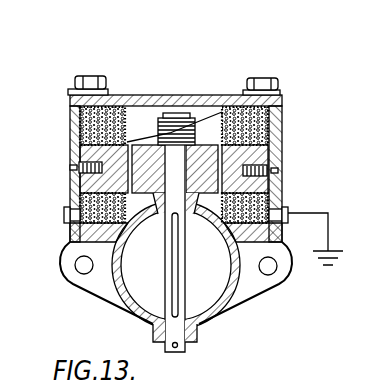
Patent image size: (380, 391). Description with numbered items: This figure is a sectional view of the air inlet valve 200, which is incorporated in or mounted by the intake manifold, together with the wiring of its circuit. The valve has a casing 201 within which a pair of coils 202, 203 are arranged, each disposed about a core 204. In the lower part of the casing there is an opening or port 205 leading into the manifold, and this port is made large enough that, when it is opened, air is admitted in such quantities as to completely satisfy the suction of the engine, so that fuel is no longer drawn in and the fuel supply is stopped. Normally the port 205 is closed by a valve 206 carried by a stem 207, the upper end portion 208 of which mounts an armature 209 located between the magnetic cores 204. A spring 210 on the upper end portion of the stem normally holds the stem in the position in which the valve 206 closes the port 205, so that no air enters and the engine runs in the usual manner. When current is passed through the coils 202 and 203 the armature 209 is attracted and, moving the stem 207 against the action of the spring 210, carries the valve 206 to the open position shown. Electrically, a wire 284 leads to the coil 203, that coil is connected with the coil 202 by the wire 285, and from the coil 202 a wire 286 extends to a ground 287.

The air inlet valve 200 is at (234, 21).
The casing 201 is at (276, 190).
The coil 202 is at (272, 117).
The coil 203 is at (80, 124).
The core 204 is at (88, 151).
The port 205 is at (147, 292).
The valve 206 is at (173, 297).
The stem 207 is at (166, 357).
The upper end portion 208 is at (177, 112).
The armature 209 is at (143, 148).
The spring 210 is at (203, 111).
The wire 284 is at (64, 213).
The wire 285 is at (224, 110).
The wire 286 is at (328, 213).
The ground 287 is at (360, 235).